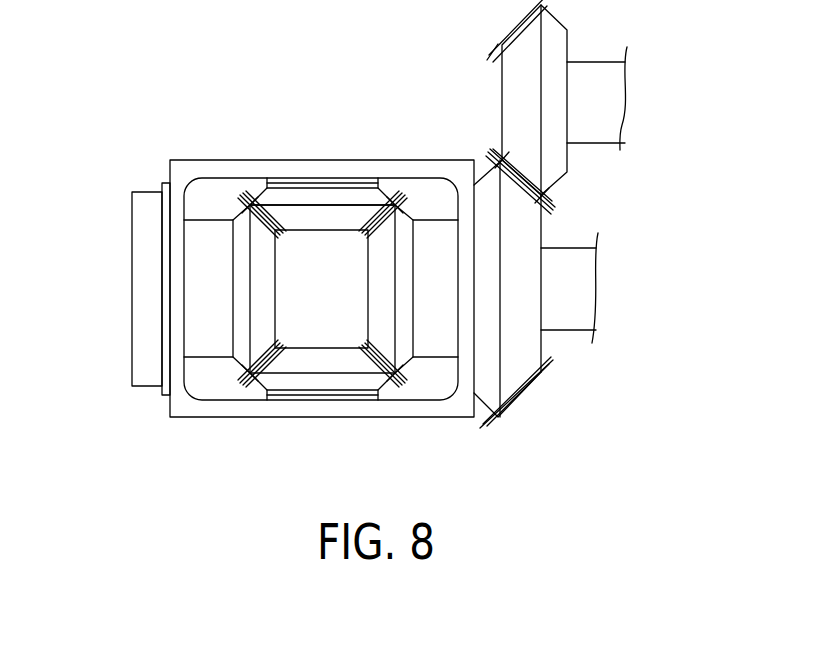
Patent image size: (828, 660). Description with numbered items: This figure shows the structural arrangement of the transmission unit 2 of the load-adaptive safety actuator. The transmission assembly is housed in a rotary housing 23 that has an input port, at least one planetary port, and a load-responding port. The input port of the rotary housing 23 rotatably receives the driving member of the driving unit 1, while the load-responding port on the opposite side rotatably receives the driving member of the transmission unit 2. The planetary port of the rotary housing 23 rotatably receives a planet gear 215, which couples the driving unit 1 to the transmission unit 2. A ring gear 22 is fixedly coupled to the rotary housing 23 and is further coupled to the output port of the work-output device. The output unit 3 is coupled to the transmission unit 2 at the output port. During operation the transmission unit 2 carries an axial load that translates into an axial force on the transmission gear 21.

The driving unit 1 is at (434, 252).
The transmission unit 2 is at (206, 285).
The transmission gear 21 is at (245, 203).
The planet gear 215 is at (302, 203).
The ring gear 22 is at (517, 360).
The rotary housing 23 is at (185, 171).
The output unit 3 is at (500, 92).